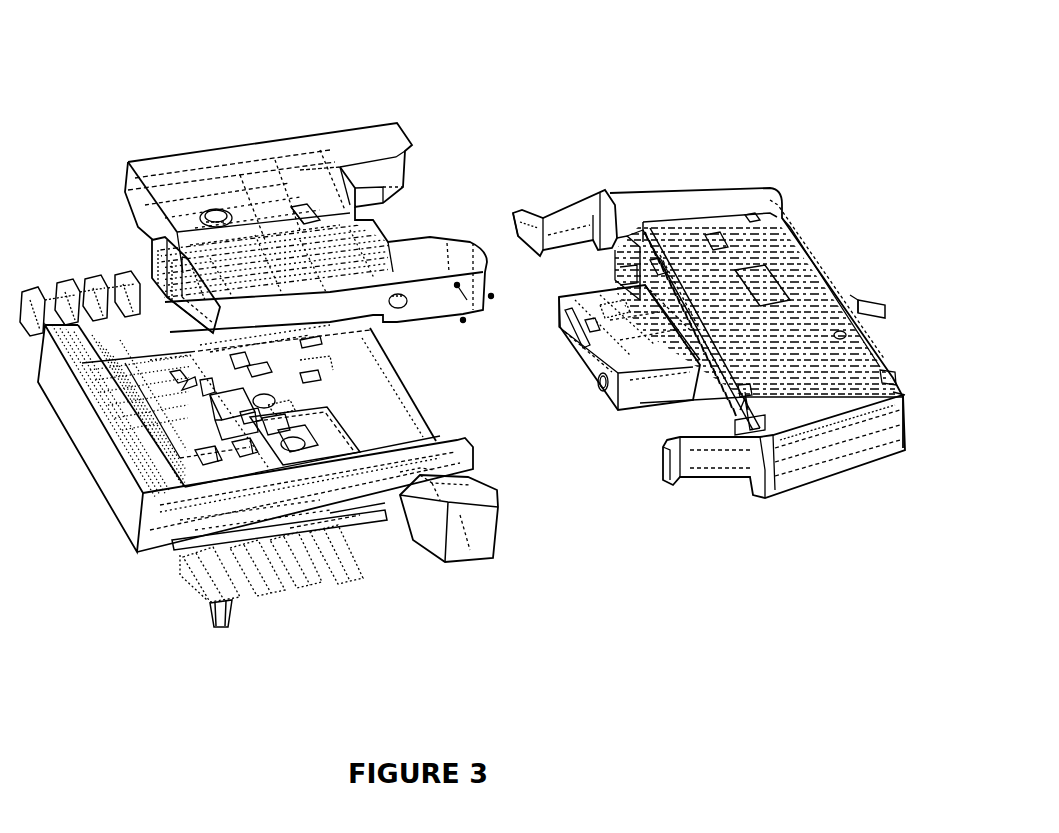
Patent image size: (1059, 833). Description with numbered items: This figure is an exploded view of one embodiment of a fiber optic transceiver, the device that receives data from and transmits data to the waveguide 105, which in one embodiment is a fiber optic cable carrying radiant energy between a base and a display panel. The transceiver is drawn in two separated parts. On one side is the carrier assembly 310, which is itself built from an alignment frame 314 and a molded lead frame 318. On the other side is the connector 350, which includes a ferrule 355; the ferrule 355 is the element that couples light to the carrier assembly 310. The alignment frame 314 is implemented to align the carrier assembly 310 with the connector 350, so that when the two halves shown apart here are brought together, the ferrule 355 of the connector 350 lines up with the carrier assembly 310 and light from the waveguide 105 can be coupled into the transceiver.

The waveguide 105 is at (868, 304).
The carrier assembly 310 is at (47, 327).
The alignment frame 314 is at (371, 121).
The molded lead frame 318 is at (133, 571).
The connector 350 is at (826, 495).
The ferrule 355 is at (628, 398).